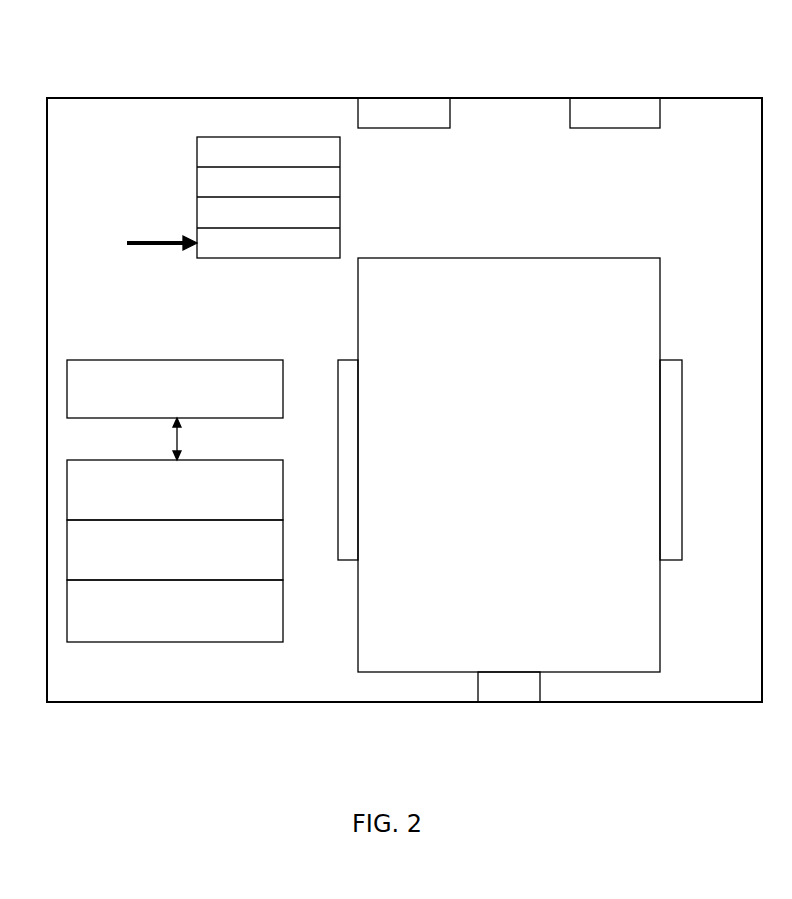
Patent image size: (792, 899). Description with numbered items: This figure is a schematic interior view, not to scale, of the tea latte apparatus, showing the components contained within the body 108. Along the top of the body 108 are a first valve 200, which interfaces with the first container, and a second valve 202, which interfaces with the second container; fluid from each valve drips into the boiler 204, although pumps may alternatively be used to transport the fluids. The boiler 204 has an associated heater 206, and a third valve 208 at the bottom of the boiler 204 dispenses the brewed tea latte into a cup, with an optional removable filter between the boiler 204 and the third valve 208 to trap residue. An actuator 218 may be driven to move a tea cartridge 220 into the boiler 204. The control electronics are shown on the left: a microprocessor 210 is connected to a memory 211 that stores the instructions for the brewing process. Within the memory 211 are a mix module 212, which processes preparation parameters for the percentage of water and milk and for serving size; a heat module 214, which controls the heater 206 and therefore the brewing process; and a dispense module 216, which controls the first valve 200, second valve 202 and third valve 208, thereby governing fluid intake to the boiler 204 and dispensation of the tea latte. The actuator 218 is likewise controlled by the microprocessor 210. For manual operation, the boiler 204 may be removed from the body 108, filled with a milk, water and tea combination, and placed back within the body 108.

The body 108 is at (163, 97).
The first valve 200 is at (397, 95).
The second valve 202 is at (620, 95).
The boiler 204 is at (570, 258).
The heater 206 is at (684, 384).
The third valve 208 is at (540, 679).
The microprocessor 210 is at (153, 358).
The memory 211 is at (199, 535).
The mix module 212 is at (286, 475).
The heat module 214 is at (286, 535).
The dispense module 216 is at (287, 598).
The actuator 218 is at (167, 240).
The tea cartridge 220 is at (343, 147).